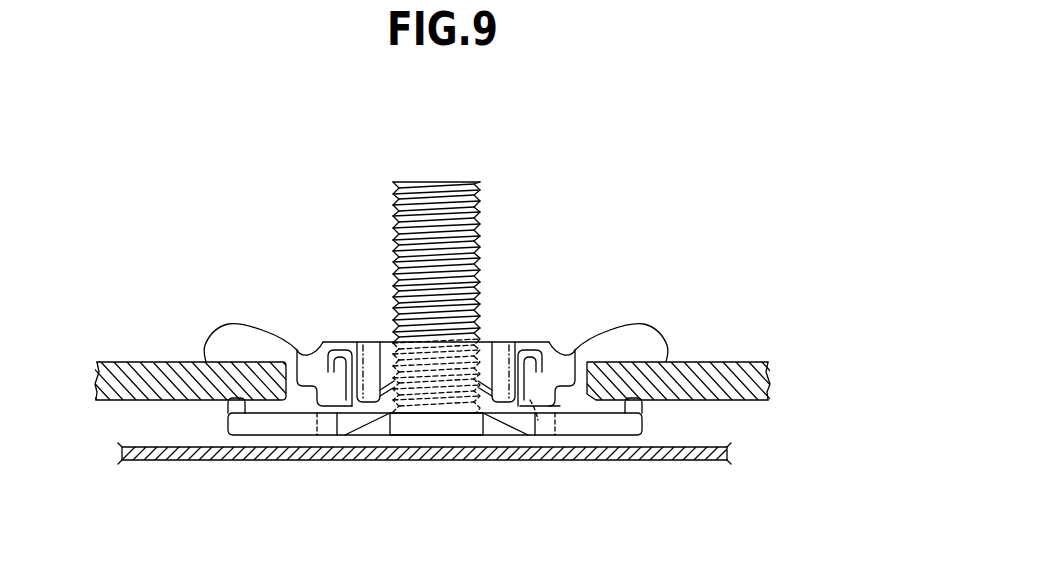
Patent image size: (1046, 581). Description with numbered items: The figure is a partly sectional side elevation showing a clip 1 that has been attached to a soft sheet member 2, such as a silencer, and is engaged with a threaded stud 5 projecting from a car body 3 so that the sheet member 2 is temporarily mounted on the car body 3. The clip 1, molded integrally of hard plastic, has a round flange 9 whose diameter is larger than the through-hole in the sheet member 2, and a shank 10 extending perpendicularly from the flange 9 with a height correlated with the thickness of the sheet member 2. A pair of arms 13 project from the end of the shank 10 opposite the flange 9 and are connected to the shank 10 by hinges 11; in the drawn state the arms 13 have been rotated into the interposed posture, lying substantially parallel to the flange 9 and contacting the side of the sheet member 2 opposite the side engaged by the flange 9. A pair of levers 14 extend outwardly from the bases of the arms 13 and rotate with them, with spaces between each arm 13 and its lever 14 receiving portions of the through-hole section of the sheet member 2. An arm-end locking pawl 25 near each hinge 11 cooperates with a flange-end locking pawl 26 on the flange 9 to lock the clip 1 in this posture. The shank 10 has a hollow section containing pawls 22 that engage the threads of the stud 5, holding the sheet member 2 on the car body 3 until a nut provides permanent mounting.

The clip 1 is at (290, 335).
The sheet member 2 is at (123, 366).
The car body 3 is at (133, 463).
The threaded stud 5 is at (458, 182).
The flange 9 is at (243, 423).
The shank 10 is at (333, 407).
The hinge 11 is at (322, 348).
The arm 13 is at (223, 342).
The lever 14 is at (218, 412).
The pawl 22 is at (380, 400).
The arm-end locking pawl 25 is at (537, 405).
The flange-end locking pawl 26 is at (557, 402).